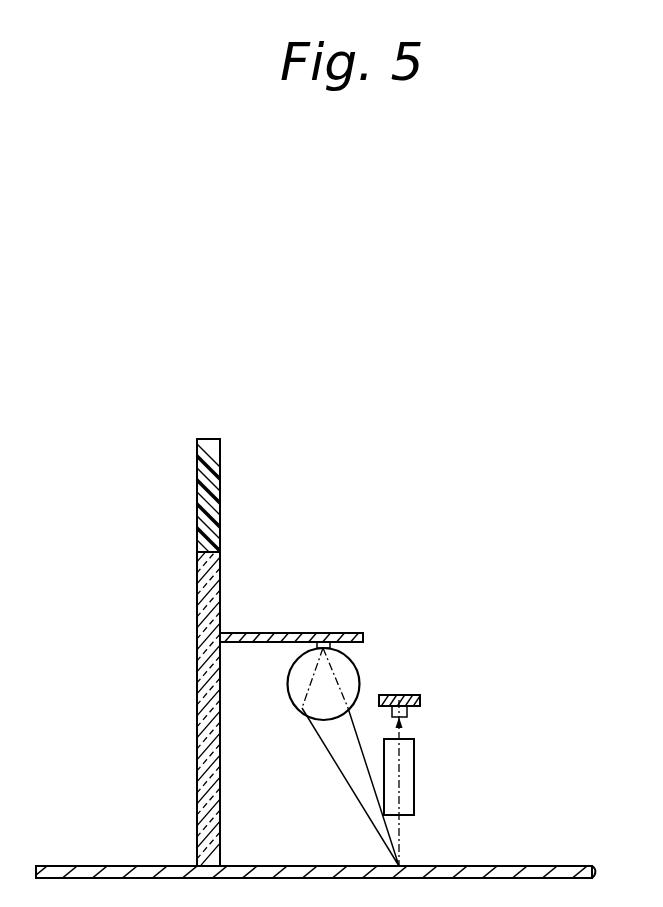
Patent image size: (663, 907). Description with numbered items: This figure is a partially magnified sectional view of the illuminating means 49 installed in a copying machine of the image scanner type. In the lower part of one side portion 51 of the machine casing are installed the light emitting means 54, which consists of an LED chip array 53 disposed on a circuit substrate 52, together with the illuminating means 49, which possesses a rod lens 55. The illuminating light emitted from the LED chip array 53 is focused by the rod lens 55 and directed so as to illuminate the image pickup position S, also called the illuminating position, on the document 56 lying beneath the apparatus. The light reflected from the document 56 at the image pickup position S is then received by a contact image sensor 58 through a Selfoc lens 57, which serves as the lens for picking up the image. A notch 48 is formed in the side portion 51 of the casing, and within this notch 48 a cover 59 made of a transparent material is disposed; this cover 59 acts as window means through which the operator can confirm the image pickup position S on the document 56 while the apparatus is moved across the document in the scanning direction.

The notch 48 is at (198, 557).
The illuminating means 49 is at (442, 521).
The side portion of casing 51 is at (214, 493).
The circuit substrate 52 is at (282, 632).
The LED chip array 53 is at (334, 637).
The light emitting means 54 is at (393, 573).
The rod lens 55 is at (290, 682).
The document 56 is at (537, 868).
The Selfoc lens 57 is at (414, 762).
The contact image sensor 58 is at (408, 712).
The cover 59 is at (198, 730).
The image pickup position S is at (405, 858).